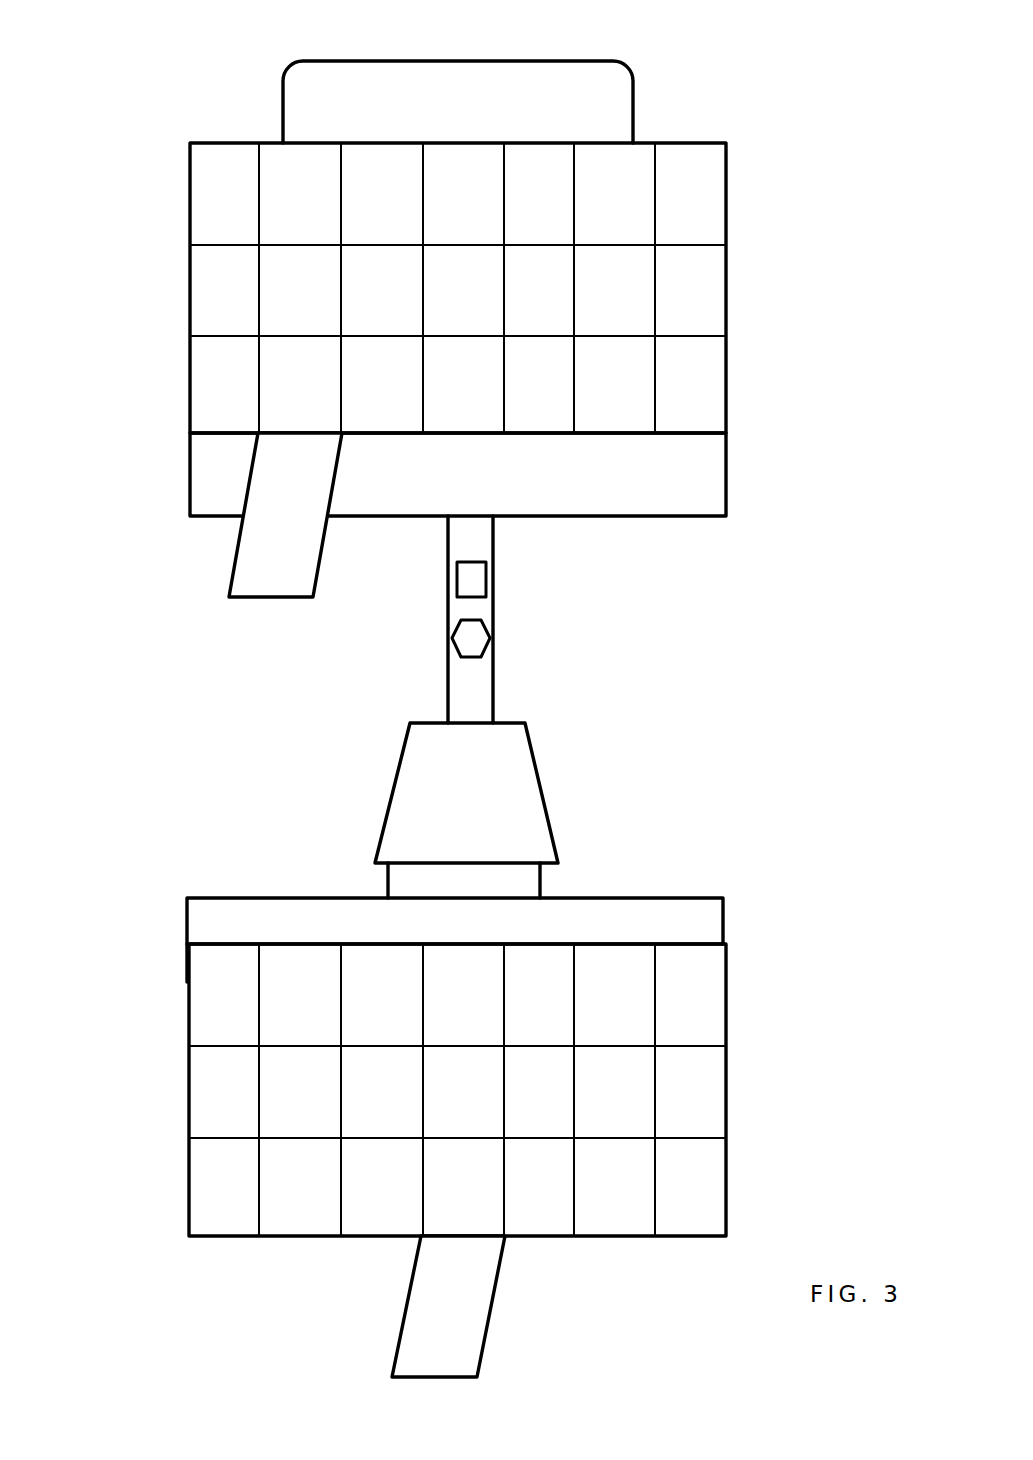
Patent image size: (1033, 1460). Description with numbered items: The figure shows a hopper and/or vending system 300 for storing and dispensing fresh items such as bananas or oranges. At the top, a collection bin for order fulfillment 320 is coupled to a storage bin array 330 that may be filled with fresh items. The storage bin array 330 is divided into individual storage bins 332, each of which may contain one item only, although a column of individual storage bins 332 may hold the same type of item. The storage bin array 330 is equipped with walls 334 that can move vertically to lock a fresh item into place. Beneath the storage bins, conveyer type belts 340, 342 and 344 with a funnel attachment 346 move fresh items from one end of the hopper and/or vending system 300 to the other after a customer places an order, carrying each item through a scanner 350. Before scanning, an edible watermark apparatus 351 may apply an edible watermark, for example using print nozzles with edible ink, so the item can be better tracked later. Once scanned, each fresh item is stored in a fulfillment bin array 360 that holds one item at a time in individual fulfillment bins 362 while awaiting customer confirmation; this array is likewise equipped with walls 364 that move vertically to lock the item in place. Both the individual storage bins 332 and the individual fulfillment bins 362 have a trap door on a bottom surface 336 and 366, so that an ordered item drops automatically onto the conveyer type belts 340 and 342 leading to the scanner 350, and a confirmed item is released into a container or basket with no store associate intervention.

The hopper and/or vending system 300 is at (800, 153).
The collection bin for order fulfillment 320 is at (458, 102).
The storage bin array 330 is at (117, 227).
The individual storage bin 332 is at (199, 284).
The walls 334 is at (198, 377).
The trap door on a bottom surface 336 is at (274, 570).
The conveyer type belt 340 is at (206, 496).
The conveyer type belt 342 is at (486, 699).
The conveyer type belt 344 is at (232, 914).
The funnel attachment 346 is at (504, 808).
The scanner 350 is at (499, 641).
The edible watermark apparatus 351 is at (499, 585).
The fulfillment bin array 360 is at (125, 1033).
The individual fulfillment bin 362 is at (199, 1181).
The walls 364 is at (199, 1086).
The trap door on a bottom surface 366 is at (425, 1288).